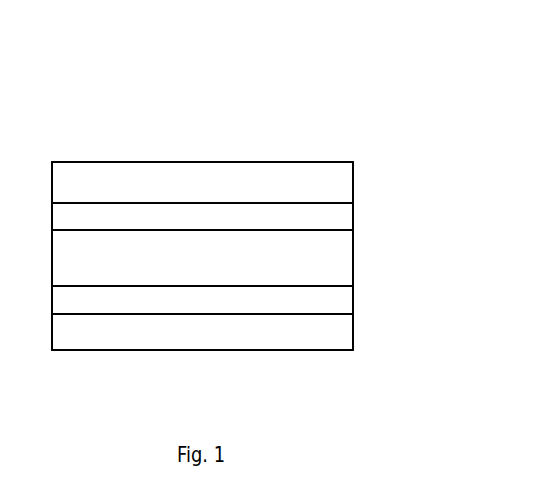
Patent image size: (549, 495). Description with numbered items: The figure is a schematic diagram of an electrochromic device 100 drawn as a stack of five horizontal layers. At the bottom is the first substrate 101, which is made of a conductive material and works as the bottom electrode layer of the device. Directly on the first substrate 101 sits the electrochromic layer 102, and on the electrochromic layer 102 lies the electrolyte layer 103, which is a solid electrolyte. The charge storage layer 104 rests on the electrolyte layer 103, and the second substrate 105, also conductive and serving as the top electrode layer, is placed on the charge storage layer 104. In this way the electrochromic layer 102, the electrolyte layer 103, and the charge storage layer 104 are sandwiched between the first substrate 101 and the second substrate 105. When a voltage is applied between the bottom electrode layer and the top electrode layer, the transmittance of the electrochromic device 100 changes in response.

The electrochromic device 100 is at (216, 52).
The first substrate 101 is at (353, 331).
The electrochromic layer 102 is at (353, 297).
The electrolyte layer 103 is at (353, 259).
The charge storage layer 104 is at (353, 217).
The second substrate 105 is at (353, 183).